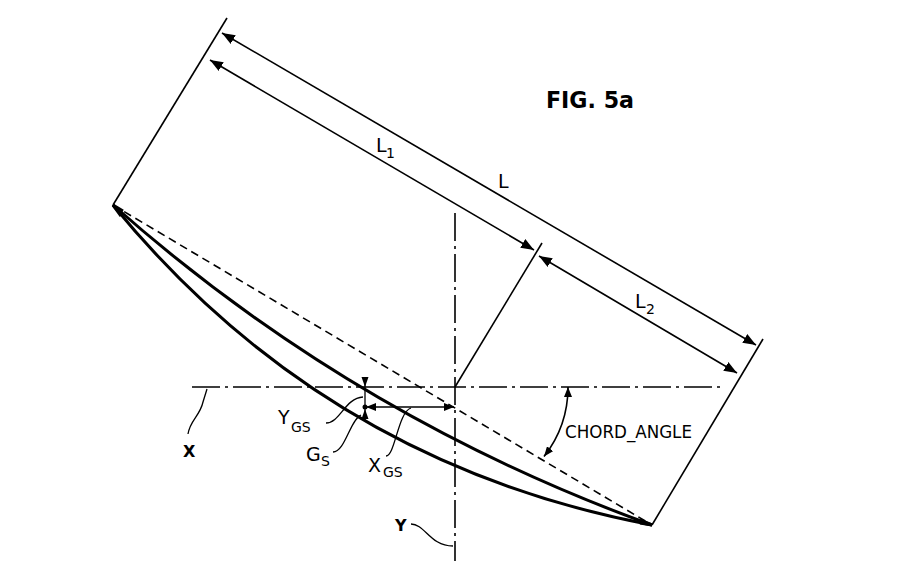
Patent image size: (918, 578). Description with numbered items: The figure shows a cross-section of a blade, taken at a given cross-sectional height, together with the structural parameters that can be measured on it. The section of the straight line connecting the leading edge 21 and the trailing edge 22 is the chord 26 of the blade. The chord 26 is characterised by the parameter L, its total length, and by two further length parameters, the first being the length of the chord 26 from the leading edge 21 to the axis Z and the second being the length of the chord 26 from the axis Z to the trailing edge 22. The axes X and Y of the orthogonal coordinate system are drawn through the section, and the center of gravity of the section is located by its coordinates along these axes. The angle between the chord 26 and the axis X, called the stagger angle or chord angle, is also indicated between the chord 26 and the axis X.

The leading edge 21 is at (110, 204).
The trailing edge 22 is at (657, 528).
The chord 26 is at (229, 273).